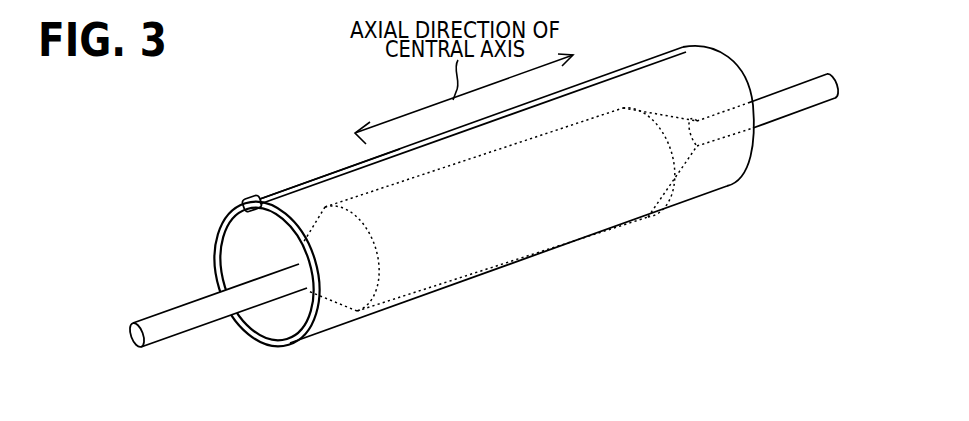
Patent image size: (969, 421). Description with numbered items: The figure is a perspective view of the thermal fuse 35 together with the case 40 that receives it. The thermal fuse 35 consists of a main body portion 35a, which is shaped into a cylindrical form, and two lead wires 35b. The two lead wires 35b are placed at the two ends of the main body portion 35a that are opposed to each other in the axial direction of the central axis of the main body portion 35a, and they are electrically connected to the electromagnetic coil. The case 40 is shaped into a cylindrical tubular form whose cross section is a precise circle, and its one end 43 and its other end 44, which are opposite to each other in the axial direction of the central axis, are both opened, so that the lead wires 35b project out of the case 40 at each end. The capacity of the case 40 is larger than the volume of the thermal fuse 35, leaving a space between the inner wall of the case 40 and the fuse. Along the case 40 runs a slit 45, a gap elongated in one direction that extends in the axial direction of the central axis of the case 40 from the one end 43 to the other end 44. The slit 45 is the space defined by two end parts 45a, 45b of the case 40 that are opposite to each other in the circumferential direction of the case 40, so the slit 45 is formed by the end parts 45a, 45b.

The thermal fuse 35 is at (430, 262).
The main body portion 35a is at (527, 252).
The lead wires 35b is at (192, 317).
The case 40 is at (350, 322).
The one end 43 is at (217, 263).
The other end 44 is at (706, 52).
The slit 45 is at (253, 215).
The end part 45a is at (246, 197).
The end part 45b is at (258, 197).